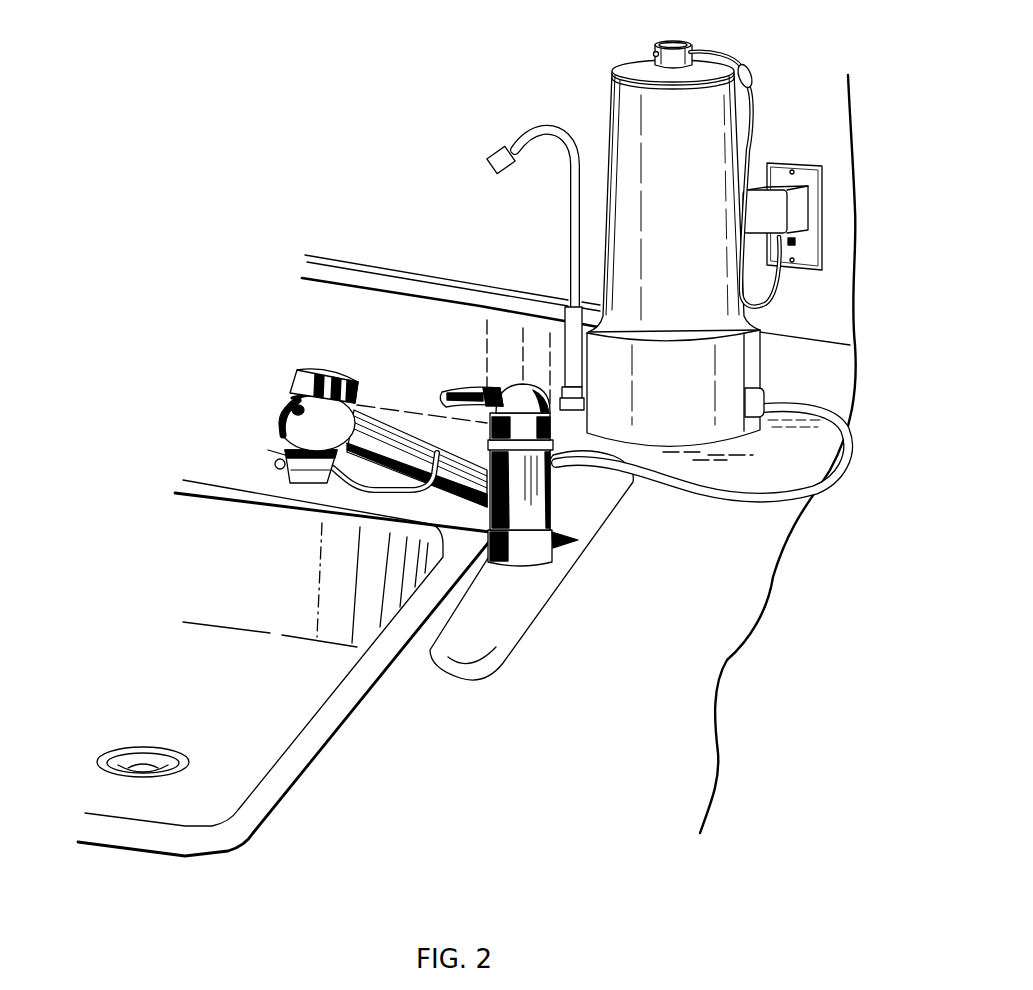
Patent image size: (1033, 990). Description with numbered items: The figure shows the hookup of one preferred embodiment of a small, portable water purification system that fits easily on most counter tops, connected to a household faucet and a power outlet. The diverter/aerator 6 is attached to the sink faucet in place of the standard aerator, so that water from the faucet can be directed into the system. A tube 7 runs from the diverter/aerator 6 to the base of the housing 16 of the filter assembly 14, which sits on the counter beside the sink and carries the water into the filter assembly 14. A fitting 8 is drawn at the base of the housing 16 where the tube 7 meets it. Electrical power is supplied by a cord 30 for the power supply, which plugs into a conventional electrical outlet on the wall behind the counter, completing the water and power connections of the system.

The filter assembly 14 is at (598, 108).
The housing 16 is at (637, 221).
The cord 30 is at (757, 146).
The inlet fitting 8 is at (765, 390).
The tube 7 is at (700, 497).
The diverter/aerator 6 is at (287, 457).